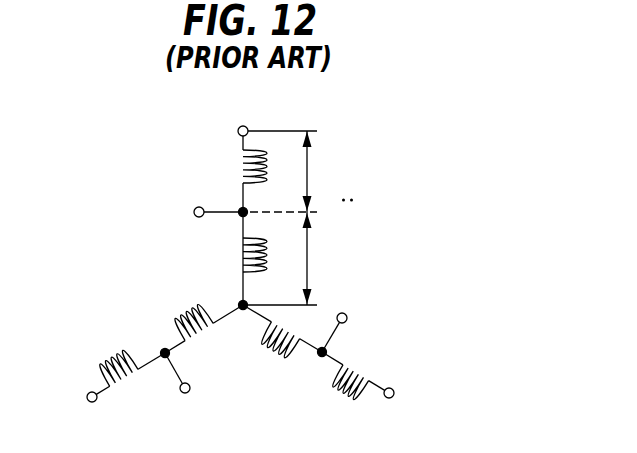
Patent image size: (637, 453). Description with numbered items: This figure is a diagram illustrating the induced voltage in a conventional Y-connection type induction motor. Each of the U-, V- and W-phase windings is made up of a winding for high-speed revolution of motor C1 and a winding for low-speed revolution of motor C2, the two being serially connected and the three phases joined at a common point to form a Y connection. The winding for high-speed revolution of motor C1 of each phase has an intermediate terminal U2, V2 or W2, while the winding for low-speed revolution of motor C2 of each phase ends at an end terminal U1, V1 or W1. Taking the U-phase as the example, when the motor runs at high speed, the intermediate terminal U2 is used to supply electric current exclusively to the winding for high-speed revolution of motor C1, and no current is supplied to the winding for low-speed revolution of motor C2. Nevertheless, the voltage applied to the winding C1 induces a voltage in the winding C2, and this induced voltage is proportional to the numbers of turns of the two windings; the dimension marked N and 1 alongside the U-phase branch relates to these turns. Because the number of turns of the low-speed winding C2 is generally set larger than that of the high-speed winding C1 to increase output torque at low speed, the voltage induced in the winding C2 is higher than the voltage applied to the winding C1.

The end terminal U1 is at (240, 116).
The intermediate terminal U2 is at (200, 213).
The end terminal V1 is at (86, 410).
The intermediate terminal V2 is at (187, 393).
The end terminal W1 is at (402, 406).
The intermediate terminal W2 is at (351, 317).
The winding for high-speed revolution of motor C1 is at (229, 313).
The winding for low-speed revolution of motor C2 is at (232, 288).
The number of turns N is at (302, 171).
The turn 1 is at (300, 252).